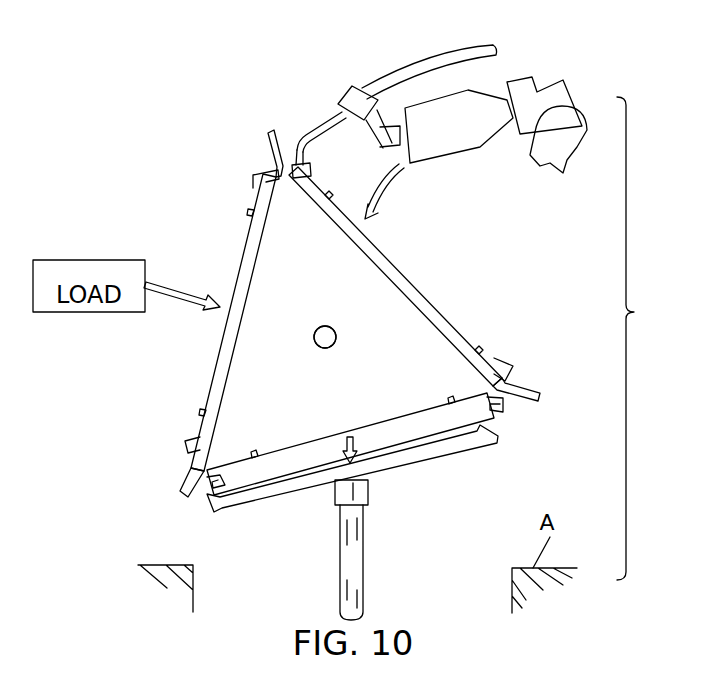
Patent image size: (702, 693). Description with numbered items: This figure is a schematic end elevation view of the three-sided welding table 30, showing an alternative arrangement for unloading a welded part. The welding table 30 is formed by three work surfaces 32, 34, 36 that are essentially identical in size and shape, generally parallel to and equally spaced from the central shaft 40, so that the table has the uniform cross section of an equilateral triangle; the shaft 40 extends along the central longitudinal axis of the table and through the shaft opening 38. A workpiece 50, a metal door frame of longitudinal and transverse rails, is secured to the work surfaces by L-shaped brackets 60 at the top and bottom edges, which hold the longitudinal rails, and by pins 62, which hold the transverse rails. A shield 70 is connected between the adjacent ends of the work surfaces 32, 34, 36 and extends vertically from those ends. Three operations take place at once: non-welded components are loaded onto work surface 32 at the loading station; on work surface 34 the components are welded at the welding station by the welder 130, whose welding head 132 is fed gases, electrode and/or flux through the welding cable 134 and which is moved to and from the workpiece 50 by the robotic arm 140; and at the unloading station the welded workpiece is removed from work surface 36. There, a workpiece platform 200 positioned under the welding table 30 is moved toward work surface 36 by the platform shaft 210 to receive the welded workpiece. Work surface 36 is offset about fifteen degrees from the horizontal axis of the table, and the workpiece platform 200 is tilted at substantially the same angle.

The welding table 30 is at (354, 336).
The work surface 32 is at (250, 253).
The work surface 34 is at (385, 263).
The work surface 36 is at (390, 420).
The shaft opening 38 is at (334, 326).
The shaft 40 is at (333, 344).
The workpiece 50 is at (205, 352).
The brackets 60 is at (255, 174).
The pins 62 is at (248, 212).
The shield 70 is at (268, 143).
The welder 130 is at (329, 97).
The welding head 132 is at (302, 142).
The welding cable 134 is at (430, 58).
The robotic arm 140 is at (567, 157).
The workpiece platform 200 is at (264, 505).
The platform shaft 210 is at (353, 558).